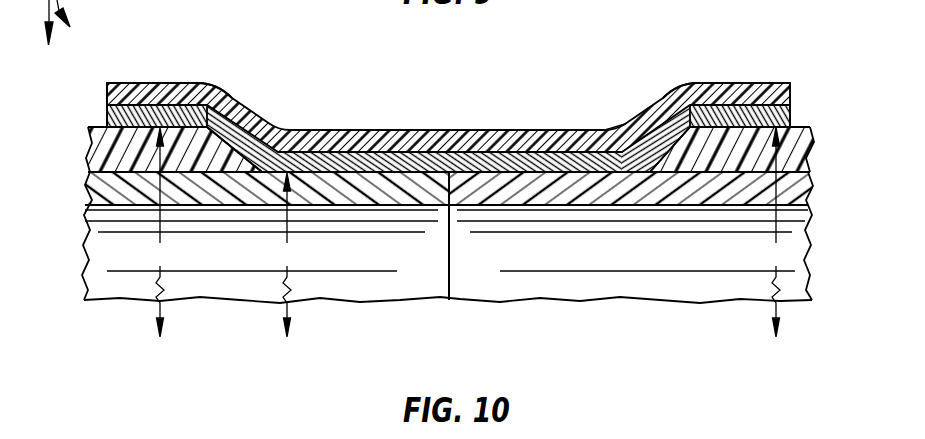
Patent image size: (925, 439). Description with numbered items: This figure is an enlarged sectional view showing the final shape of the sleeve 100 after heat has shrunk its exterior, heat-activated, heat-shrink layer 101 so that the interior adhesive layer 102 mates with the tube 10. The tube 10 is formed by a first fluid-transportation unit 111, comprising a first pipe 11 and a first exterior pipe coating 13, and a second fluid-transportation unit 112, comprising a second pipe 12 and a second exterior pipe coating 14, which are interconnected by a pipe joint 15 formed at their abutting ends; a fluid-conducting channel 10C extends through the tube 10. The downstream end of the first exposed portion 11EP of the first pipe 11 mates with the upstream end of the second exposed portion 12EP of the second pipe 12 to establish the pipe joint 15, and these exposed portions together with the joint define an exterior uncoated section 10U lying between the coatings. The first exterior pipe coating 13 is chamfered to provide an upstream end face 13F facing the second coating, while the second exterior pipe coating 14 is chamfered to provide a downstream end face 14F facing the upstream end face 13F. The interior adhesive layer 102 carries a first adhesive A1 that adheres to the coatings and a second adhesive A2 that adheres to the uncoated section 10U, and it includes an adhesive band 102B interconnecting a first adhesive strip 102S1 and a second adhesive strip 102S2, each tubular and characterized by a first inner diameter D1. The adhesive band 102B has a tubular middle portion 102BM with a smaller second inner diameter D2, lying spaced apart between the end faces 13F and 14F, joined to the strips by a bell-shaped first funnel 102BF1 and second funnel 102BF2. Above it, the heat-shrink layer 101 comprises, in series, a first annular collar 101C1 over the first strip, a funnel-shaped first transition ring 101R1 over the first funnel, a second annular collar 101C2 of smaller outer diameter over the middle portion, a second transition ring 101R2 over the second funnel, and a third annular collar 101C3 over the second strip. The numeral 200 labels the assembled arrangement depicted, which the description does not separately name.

The tube 10 is at (779, 363).
The fluid-conducting channel 10C is at (127, 249).
The exterior uncoated section 10U is at (213, 173).
The first pipe 11 is at (90, 190).
The first exposed portion 11EP is at (390, 188).
The second pipe 12 is at (649, 207).
The second exposed portion 12EP is at (531, 188).
The first exterior pipe coating 13 is at (90, 152).
The upstream end face 13F is at (240, 158).
The second exterior pipe coating 14 is at (800, 148).
The downstream end face 14F is at (677, 102).
The pipe joint 15 is at (452, 232).
The sleeve 100 is at (796, 71).
The exterior, heat-activated, heat-shrink layer 101 is at (423, 76).
The first annular collar 101C1 is at (162, 88).
The second annular collar 101C2 is at (357, 130).
The third annular collar 101C3 is at (773, 82).
The first transition ring 101R1 is at (236, 86).
The second transition ring 101R2 is at (668, 86).
The interior adhesive layer 102 is at (447, 155).
The first adhesive strip 102S1 is at (195, 106).
The second adhesive strip 102S2 is at (793, 104).
The first funnel 102BF1 is at (284, 148).
The second funnel 102BF2 is at (650, 110).
The tubular middle portion 102BM is at (474, 156).
The adhesive band 102B is at (592, 192).
The first fluid-transportation unit 111 is at (38, 195).
The second fluid-transportation unit 112 is at (856, 206).
The conductive pattern 200 is at (551, 94).
The first adhesive A1 is at (135, 107).
The second adhesive A2 is at (353, 175).
The first inner diameter D1 is at (466, 232).
The second inner diameter D2 is at (288, 255).